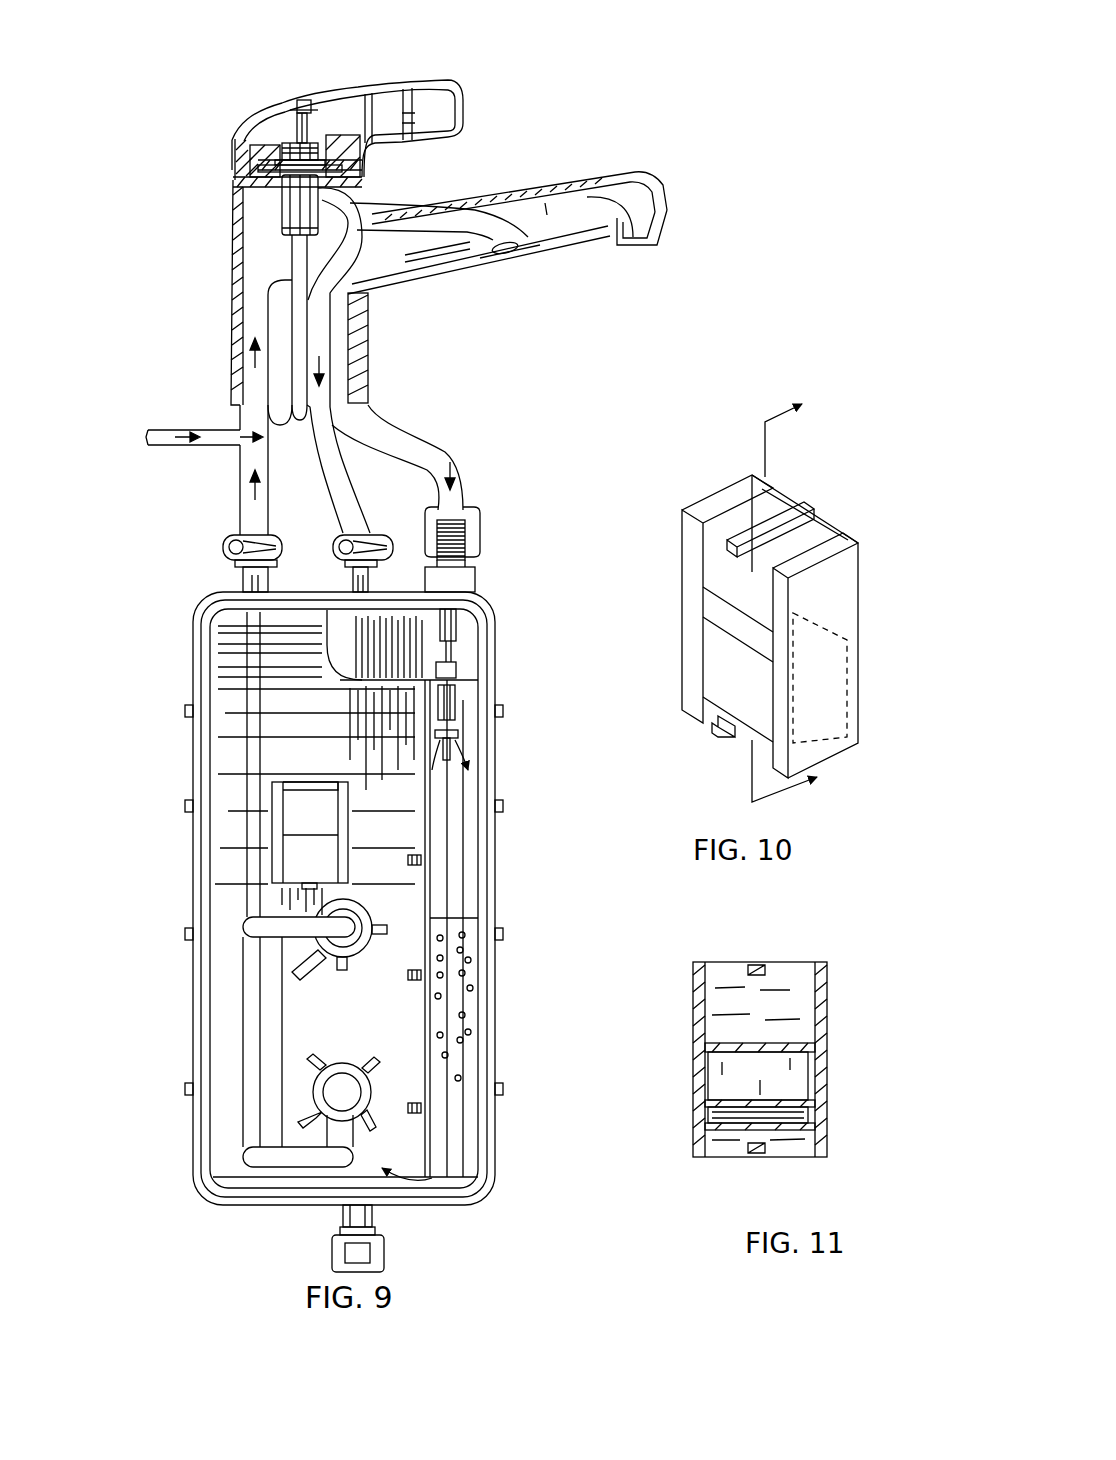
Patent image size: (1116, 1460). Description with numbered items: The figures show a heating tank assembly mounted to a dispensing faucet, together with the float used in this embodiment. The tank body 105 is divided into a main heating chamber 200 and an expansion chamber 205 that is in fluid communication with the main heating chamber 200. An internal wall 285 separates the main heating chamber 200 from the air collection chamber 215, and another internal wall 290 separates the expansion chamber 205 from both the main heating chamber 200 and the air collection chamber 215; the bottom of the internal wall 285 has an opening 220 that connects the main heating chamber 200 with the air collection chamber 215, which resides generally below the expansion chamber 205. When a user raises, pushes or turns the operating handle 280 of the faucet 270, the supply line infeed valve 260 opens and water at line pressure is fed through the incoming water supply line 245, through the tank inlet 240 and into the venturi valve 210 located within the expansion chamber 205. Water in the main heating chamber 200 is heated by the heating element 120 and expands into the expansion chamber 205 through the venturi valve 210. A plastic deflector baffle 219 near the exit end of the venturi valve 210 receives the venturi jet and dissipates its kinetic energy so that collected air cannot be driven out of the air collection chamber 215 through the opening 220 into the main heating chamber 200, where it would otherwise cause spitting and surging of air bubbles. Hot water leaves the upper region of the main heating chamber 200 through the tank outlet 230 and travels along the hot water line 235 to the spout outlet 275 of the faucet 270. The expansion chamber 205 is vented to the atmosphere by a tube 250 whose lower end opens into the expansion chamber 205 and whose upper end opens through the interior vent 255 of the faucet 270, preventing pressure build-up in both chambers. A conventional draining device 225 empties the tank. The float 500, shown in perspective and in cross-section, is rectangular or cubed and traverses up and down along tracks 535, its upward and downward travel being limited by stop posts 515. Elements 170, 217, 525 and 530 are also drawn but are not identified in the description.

In FIG. 9, the tank body 105 is at (185, 1000).
In FIG. 9, the heating element 120 is at (265, 1065).
In FIG. 9, the heating element 170 is at (375, 918).
In FIG. 9, the main heating chamber 200 is at (263, 792).
In FIG. 9, the expansion chamber 205 is at (345, 652).
In FIG. 9, the venturi valve 210 is at (453, 640).
In FIG. 9, the air collection chamber 215 is at (462, 858).
In FIG. 9, the valve body 217 is at (470, 716).
In FIG. 9, the plastic deflector baffle 219 is at (460, 737).
In FIG. 9, the opening 220 is at (432, 1173).
In FIG. 9, the draining device 225 is at (383, 1233).
In FIG. 9, the tank outlet 230 is at (240, 583).
In FIG. 9, the hot water line 235 is at (250, 495).
In FIG. 9, the tank inlet 240 is at (475, 590).
In FIG. 9, the incoming water supply line 245 is at (178, 432).
In FIG. 9, the tube 250 is at (337, 457).
In FIG. 9, the interior vent 255 is at (520, 258).
In FIG. 9, the supply line infeed valve 260 is at (280, 212).
In FIG. 9, the faucet 270 is at (600, 178).
In FIG. 9, the spout outlet 275 is at (645, 262).
In FIG. 9, the operating handle 280 is at (460, 90).
In FIG. 9, the internal wall 285 is at (447, 968).
In FIG. 9, the internal wall 290 is at (350, 672).
In FIG. 9, the float 500 is at (320, 827).
In FIG. 10, the float 500 is at (717, 697).
In FIG. 9, the stop posts 515 is at (330, 774).
In FIG. 10, the stop posts 515 is at (783, 520).
In FIG. 11, the filter element 525 is at (802, 1073).
In FIG. 11, the base element 530 is at (800, 1126).
In FIG. 9, the tracks 535 is at (281, 780).
In FIG. 10, the tracks 535 is at (717, 490).
In FIG. 11, the tracks 535 is at (692, 976).